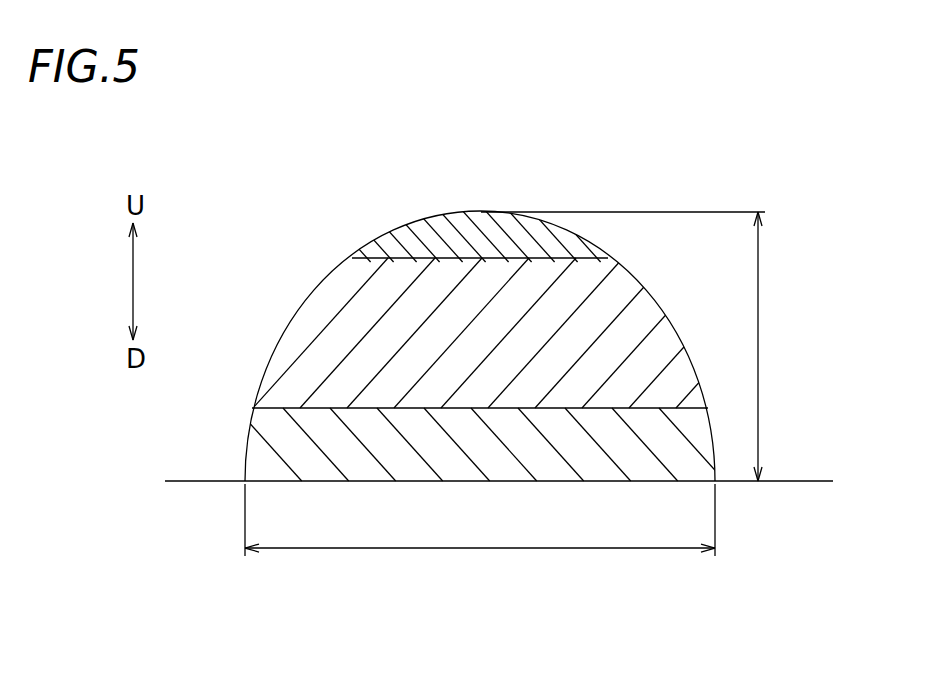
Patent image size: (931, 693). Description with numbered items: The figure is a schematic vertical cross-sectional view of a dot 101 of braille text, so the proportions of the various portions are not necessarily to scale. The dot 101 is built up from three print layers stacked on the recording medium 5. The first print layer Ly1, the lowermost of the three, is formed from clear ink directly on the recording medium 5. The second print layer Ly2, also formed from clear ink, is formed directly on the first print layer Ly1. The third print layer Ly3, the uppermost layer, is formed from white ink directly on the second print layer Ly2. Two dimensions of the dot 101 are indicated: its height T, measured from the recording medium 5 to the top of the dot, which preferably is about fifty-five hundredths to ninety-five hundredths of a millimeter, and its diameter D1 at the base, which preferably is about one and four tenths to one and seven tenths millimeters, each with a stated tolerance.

The dot 101 is at (535, 195).
The recording medium 5 is at (805, 480).
The first print layer Ly1 is at (263, 463).
The second print layer Ly2 is at (327, 307).
The third print layer Ly3 is at (422, 232).
The height T is at (630, 346).
The diameter D1 is at (480, 520).